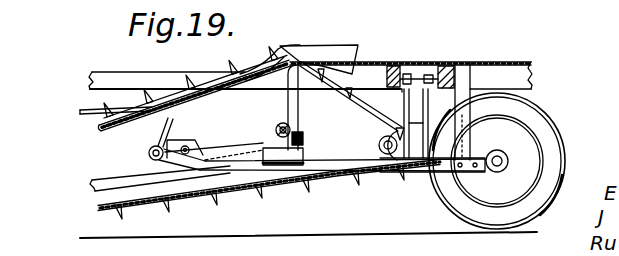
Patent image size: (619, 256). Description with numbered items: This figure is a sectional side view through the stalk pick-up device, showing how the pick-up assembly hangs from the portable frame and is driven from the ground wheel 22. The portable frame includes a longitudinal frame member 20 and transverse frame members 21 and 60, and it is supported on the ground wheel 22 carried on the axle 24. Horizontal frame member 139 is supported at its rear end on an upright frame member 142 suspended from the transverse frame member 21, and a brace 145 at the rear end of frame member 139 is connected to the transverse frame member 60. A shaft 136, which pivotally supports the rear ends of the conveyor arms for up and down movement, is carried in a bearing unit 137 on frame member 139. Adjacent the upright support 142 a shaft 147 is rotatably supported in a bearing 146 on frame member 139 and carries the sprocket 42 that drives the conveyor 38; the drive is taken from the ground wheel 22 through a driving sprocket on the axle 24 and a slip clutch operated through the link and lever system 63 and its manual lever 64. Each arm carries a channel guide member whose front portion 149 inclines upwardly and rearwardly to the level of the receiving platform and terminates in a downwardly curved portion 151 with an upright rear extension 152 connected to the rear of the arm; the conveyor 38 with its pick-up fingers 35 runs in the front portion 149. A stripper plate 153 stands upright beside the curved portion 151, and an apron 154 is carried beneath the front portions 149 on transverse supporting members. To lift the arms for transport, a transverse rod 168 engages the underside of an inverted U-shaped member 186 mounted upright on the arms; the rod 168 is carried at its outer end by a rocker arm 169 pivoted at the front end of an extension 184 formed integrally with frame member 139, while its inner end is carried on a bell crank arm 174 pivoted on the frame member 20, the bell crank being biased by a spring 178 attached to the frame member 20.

The longitudinal frame member 20 is at (120, 76).
The transverse frame member 21 is at (392, 62).
The ground wheel 22 is at (560, 130).
The axle 24 is at (498, 157).
The pick-up fingers 35 is at (259, 193).
The conveyor 38 is at (304, 183).
The sprocket 42 is at (378, 138).
The transverse frame member 60 is at (450, 65).
The link and lever system 63 is at (424, 130).
The manual lever 64 is at (537, 232).
The shaft 136 is at (279, 126).
The bearing unit 137 is at (302, 130).
The horizontal frame member 139 is at (310, 160).
The frame member 142 is at (405, 100).
The brace 145 is at (483, 60).
The bearing 146 is at (400, 162).
The shaft 147 is at (388, 154).
The front portion 149 is at (165, 104).
The curved portion 151 is at (298, 63).
The upright rear extension 152 is at (304, 133).
The stripper plate 153 is at (302, 52).
The apron 154 is at (212, 87).
The rod 168 is at (149, 153).
The rocker arm 169 is at (177, 166).
The bell crank arm 174 is at (161, 140).
The spring 178 is at (85, 112).
The extension 184 is at (237, 172).
The inverted U-shaped member 186 is at (205, 144).